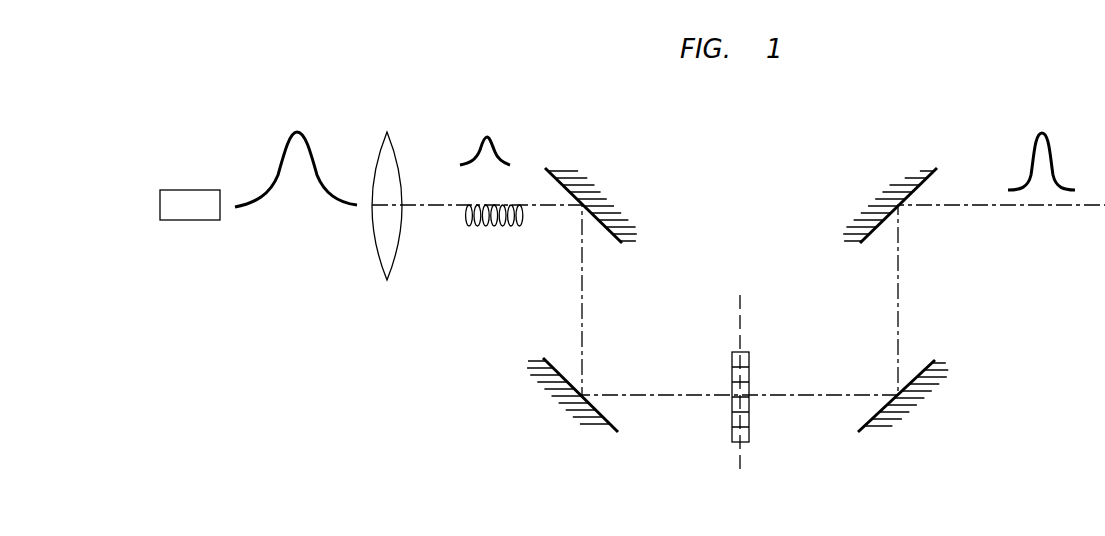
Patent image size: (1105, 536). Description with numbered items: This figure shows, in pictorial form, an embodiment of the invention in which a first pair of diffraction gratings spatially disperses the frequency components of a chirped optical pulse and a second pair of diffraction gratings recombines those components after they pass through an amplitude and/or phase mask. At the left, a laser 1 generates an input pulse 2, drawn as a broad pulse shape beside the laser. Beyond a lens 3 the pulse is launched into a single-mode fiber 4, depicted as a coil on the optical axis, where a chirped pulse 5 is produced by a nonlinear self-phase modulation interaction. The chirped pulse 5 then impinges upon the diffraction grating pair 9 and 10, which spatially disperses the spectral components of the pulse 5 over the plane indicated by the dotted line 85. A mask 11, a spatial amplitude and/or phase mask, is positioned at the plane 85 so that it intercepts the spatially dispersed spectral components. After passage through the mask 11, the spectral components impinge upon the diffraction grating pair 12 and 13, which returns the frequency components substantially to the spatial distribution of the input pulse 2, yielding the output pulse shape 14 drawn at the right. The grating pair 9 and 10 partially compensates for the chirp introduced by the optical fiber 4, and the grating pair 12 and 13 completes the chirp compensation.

The laser 1 is at (211, 190).
The input pulse 2 is at (278, 151).
The lens 3 is at (380, 153).
The single-mode fiber 4 is at (467, 227).
The chirped pulse 5 is at (478, 152).
The diffraction grating 9 is at (547, 170).
The diffraction grating 10 is at (613, 433).
The mask 11 is at (750, 377).
The plane 85 is at (743, 320).
The diffraction grating 12 is at (920, 178).
The diffraction grating 13 is at (870, 428).
The narrowed spectral distribution 14 is at (1032, 152).